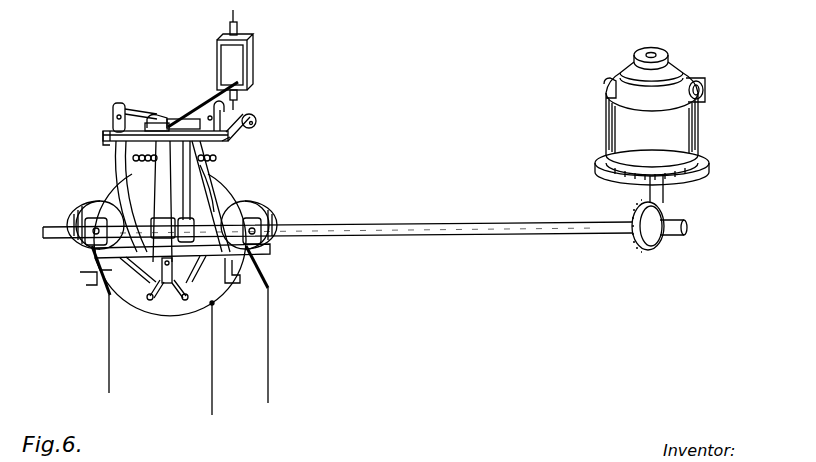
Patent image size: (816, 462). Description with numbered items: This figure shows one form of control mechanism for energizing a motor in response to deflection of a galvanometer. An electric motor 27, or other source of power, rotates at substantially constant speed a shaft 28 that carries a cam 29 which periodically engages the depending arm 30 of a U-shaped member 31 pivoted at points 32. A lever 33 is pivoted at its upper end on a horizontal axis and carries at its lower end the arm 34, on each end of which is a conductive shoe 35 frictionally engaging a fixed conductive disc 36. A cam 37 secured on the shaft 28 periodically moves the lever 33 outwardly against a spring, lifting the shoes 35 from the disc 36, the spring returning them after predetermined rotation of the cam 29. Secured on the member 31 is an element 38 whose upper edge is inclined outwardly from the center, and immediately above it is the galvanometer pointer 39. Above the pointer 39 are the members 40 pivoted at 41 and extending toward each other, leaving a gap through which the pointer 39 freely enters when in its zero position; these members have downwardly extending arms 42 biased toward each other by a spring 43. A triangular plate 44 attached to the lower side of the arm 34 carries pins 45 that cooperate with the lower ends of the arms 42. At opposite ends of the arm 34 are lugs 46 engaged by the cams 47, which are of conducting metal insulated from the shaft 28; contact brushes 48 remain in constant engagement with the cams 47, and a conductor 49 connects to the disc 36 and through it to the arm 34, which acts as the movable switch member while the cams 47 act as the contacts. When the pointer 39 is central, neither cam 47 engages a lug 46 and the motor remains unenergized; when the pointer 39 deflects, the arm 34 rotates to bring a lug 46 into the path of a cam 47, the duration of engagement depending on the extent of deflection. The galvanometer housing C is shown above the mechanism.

The electric motor 27 is at (665, 52).
The shaft 28 is at (458, 228).
The cam 29 is at (212, 210).
The depending arm 30 is at (190, 188).
The U-shaped member 31 is at (240, 117).
The pivot points 32 is at (110, 113).
The lever 33 is at (160, 182).
The arm 34 is at (112, 263).
The shoe 35 is at (109, 322).
The fixed disc 36 is at (180, 316).
The cam 37 is at (160, 208).
The element 38 is at (173, 116).
The galvanometer pointer 39 is at (200, 100).
The members 40 is at (133, 153).
The pivots 41 is at (119, 103).
The downwardly extending arms 42 is at (120, 167).
The spring 43 is at (158, 114).
The triangular plate 44 is at (165, 290).
The pins 45 is at (152, 282).
The lugs 46 is at (93, 283).
The cams 47 is at (78, 212).
The contact brushes 48 is at (109, 308).
The conductor 49 is at (212, 383).
The contact device C is at (252, 58).